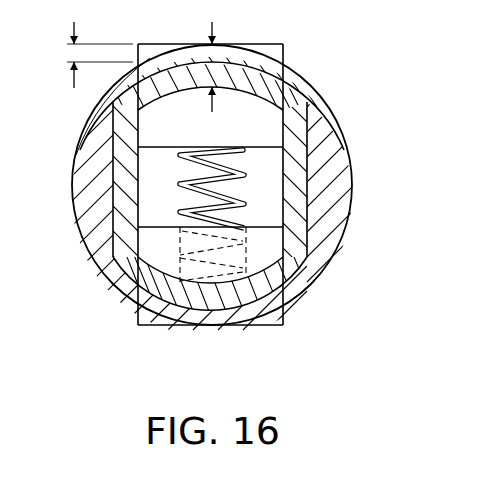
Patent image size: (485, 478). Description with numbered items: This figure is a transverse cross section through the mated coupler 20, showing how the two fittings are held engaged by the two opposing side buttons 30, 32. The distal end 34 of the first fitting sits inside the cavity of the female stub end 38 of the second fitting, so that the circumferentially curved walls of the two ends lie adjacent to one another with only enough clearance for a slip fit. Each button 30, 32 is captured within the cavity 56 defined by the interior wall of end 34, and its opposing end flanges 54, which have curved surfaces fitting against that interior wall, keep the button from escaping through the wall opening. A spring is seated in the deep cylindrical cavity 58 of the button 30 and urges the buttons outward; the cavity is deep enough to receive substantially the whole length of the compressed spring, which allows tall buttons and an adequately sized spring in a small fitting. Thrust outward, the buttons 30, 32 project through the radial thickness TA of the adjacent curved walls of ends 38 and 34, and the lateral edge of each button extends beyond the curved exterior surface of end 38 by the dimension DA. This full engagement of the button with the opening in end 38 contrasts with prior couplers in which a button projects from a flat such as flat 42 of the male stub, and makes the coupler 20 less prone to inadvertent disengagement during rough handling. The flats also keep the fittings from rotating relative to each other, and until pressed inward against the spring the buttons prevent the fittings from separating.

The coupler 20 is at (341, 284).
The button 30 is at (281, 324).
The button 32 is at (284, 44).
The distal end 34 is at (135, 275).
The distal end 38 is at (351, 187).
The flat 42 is at (113, 179).
The end flange 54 is at (277, 136).
The cavity 56 is at (277, 177).
The cavity 58 is at (245, 249).
The dimension DA is at (94, 44).
The radial thickness TA is at (213, 56).